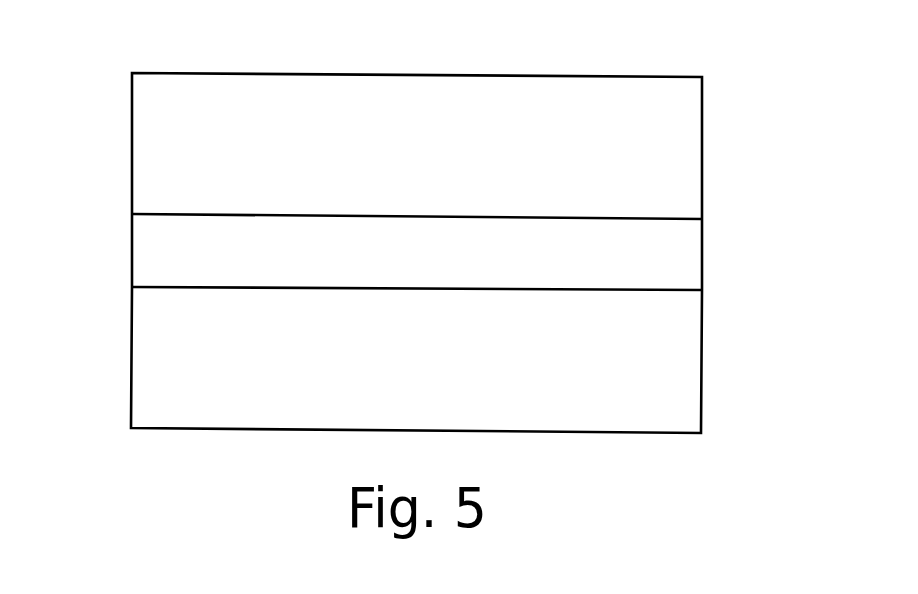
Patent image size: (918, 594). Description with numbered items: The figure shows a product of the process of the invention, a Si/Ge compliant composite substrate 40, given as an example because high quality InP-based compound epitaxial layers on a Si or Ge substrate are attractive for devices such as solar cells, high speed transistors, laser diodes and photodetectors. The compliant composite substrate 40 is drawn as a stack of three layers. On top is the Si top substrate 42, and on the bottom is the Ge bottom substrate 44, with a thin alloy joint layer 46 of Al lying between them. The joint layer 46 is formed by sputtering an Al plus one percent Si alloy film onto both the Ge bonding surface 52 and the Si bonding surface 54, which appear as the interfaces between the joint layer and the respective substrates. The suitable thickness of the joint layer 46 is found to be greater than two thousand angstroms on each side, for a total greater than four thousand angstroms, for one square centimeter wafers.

The compliant composite substrate 40 is at (720, 93).
The Si top substrate 42 is at (148, 120).
The Ge bottom substrate 44 is at (147, 362).
The alloy joint layer 46 is at (147, 256).
The Ge bonding surface 52 is at (672, 290).
The Si bonding surface 54 is at (672, 219).